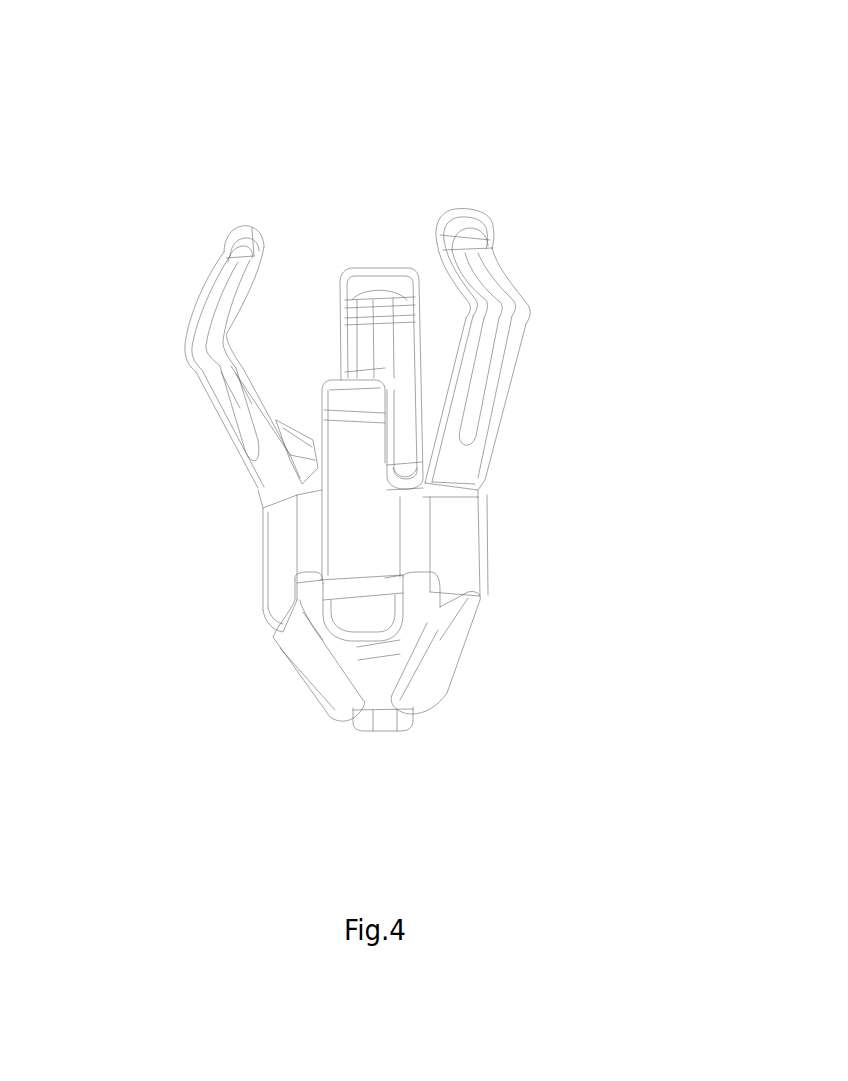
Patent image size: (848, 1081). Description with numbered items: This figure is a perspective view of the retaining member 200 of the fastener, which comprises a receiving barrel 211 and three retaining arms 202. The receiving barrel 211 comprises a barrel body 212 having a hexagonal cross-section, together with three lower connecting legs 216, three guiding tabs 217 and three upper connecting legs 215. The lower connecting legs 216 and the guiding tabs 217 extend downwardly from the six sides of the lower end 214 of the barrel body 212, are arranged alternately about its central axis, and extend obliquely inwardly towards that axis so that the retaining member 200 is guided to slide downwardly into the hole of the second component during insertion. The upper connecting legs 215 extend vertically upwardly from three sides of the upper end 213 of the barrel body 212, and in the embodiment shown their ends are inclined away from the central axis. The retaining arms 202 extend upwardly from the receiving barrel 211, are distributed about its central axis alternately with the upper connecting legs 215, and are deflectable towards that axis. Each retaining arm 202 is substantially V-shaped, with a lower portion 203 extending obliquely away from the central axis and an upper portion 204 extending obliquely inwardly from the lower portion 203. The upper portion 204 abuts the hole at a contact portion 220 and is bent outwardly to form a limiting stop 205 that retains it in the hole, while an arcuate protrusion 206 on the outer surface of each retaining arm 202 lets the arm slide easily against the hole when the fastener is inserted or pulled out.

The retaining member 200 is at (552, 131).
The retaining arm 202 is at (213, 372).
The lower portion 203 is at (480, 393).
The upper portion 204 is at (487, 270).
The limiting stop 205 is at (460, 225).
The arcuate protrusion 206 is at (223, 407).
The receiving barrel 211 is at (263, 553).
The barrel body 212 is at (270, 583).
The upper end 213 is at (283, 477).
The lower end 214 is at (357, 622).
The upper connecting leg 215 is at (350, 395).
The lower connecting leg 216 is at (437, 673).
The guiding tab 217 is at (295, 690).
The contact portion 220 is at (470, 240).